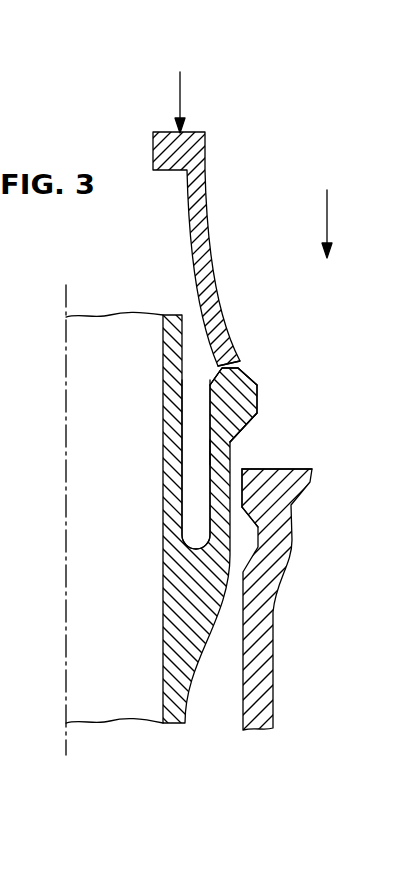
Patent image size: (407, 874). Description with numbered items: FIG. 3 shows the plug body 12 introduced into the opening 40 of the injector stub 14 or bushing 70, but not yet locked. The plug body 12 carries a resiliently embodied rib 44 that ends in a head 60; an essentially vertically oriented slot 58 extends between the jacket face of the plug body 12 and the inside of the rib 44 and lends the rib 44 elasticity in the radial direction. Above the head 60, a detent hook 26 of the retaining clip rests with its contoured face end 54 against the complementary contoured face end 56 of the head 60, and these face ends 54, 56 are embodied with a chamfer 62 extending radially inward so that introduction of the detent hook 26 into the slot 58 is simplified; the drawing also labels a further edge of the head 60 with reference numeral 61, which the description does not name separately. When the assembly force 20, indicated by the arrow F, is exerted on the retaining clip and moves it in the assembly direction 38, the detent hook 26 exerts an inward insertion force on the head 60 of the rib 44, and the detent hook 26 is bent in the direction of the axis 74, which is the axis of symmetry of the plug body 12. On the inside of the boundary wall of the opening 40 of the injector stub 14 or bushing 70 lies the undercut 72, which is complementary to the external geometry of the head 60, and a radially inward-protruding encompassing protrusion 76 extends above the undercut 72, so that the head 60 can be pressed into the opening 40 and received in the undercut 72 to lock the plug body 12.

The plug body 12 is at (190, 622).
The injector stub 14 is at (265, 597).
The assembly force 20 is at (181, 93).
The detent hook 26 is at (196, 213).
The assembly direction 38 is at (328, 215).
The opening 40 is at (236, 469).
The rib 44 is at (222, 452).
The contoured face end 54 is at (230, 369).
The face end 56 is at (218, 370).
The slot 58 is at (196, 506).
The head 60 is at (238, 403).
The lower chamfer 61 is at (243, 429).
The chamfer 62 is at (248, 377).
The bushing 70 is at (203, 599).
The undercut 72 is at (262, 510).
The axis 74 is at (66, 745).
The encompassing protrusion 76 is at (253, 481).